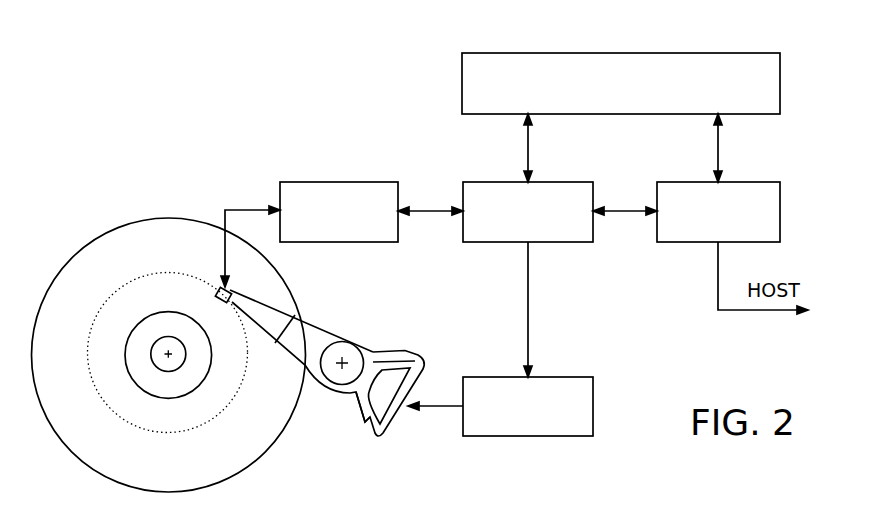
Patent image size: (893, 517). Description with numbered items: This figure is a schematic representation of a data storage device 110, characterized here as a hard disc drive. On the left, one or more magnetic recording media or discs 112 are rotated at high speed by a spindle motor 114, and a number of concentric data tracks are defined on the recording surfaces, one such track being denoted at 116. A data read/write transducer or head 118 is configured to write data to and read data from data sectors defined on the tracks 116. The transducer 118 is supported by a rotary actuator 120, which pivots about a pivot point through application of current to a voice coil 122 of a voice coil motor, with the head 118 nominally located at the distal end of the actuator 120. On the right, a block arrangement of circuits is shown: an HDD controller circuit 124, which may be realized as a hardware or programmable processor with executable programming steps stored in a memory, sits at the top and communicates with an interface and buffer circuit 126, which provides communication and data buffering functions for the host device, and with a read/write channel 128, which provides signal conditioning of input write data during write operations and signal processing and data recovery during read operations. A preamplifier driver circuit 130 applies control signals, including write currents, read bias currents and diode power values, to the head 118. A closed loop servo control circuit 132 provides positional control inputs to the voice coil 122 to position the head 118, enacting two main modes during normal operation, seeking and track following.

The data storage device 110 is at (103, 195).
The magnetic recording media (discs) 112 is at (97, 447).
The spindle motor 114 is at (172, 327).
The data track 116 is at (172, 433).
The data read/write transducer (head) 118 is at (215, 283).
The rotary actuator 120 is at (372, 326).
The voice coil 122 is at (416, 357).
The HDD controller circuit 124 is at (622, 53).
The interface (I/F) and buffer circuit 126 is at (752, 182).
The read/write (R/W) channel 128 is at (563, 182).
The preamplifier driver (preamp) circuit 130 is at (338, 182).
The closed loop servo control circuit 132 is at (563, 377).